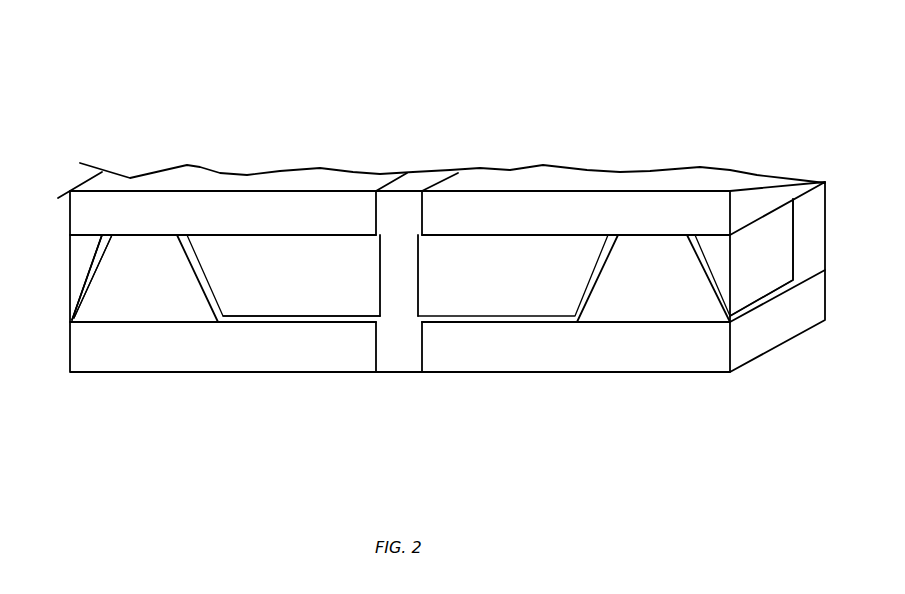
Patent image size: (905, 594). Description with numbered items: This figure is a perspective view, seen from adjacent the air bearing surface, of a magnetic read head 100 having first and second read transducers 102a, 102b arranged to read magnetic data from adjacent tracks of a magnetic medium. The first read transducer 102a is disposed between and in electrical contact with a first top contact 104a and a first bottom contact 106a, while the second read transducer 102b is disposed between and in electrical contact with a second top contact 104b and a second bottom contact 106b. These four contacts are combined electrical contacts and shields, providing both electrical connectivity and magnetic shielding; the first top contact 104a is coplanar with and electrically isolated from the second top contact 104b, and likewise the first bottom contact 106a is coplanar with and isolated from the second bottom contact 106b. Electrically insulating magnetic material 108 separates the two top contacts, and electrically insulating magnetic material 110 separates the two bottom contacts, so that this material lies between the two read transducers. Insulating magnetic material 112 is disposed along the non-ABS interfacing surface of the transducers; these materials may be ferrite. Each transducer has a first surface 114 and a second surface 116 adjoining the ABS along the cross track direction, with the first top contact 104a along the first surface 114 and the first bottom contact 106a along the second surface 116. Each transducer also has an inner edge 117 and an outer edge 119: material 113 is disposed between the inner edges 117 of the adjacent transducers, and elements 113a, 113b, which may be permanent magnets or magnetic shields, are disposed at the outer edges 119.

The magnetic read head 100 is at (257, 84).
The first read transducer 102a is at (147, 256).
The second read transducer 102b is at (667, 250).
The first top contact 104a is at (200, 210).
The second top contact 104b is at (613, 213).
The first bottom contact 106a is at (237, 362).
The second bottom contact 106b is at (683, 357).
The electrically insulating magnetic material 108 is at (405, 207).
The electrically insulating magnetic material 110 is at (398, 360).
The insulating magnetic material 112 is at (535, 320).
The material 113 is at (353, 258).
The element 113a is at (77, 267).
The element 113b is at (750, 263).
The first surface 114 is at (142, 240).
The second surface 116 is at (630, 323).
The inner edge 117 is at (208, 303).
The outer edge 119 is at (98, 280).